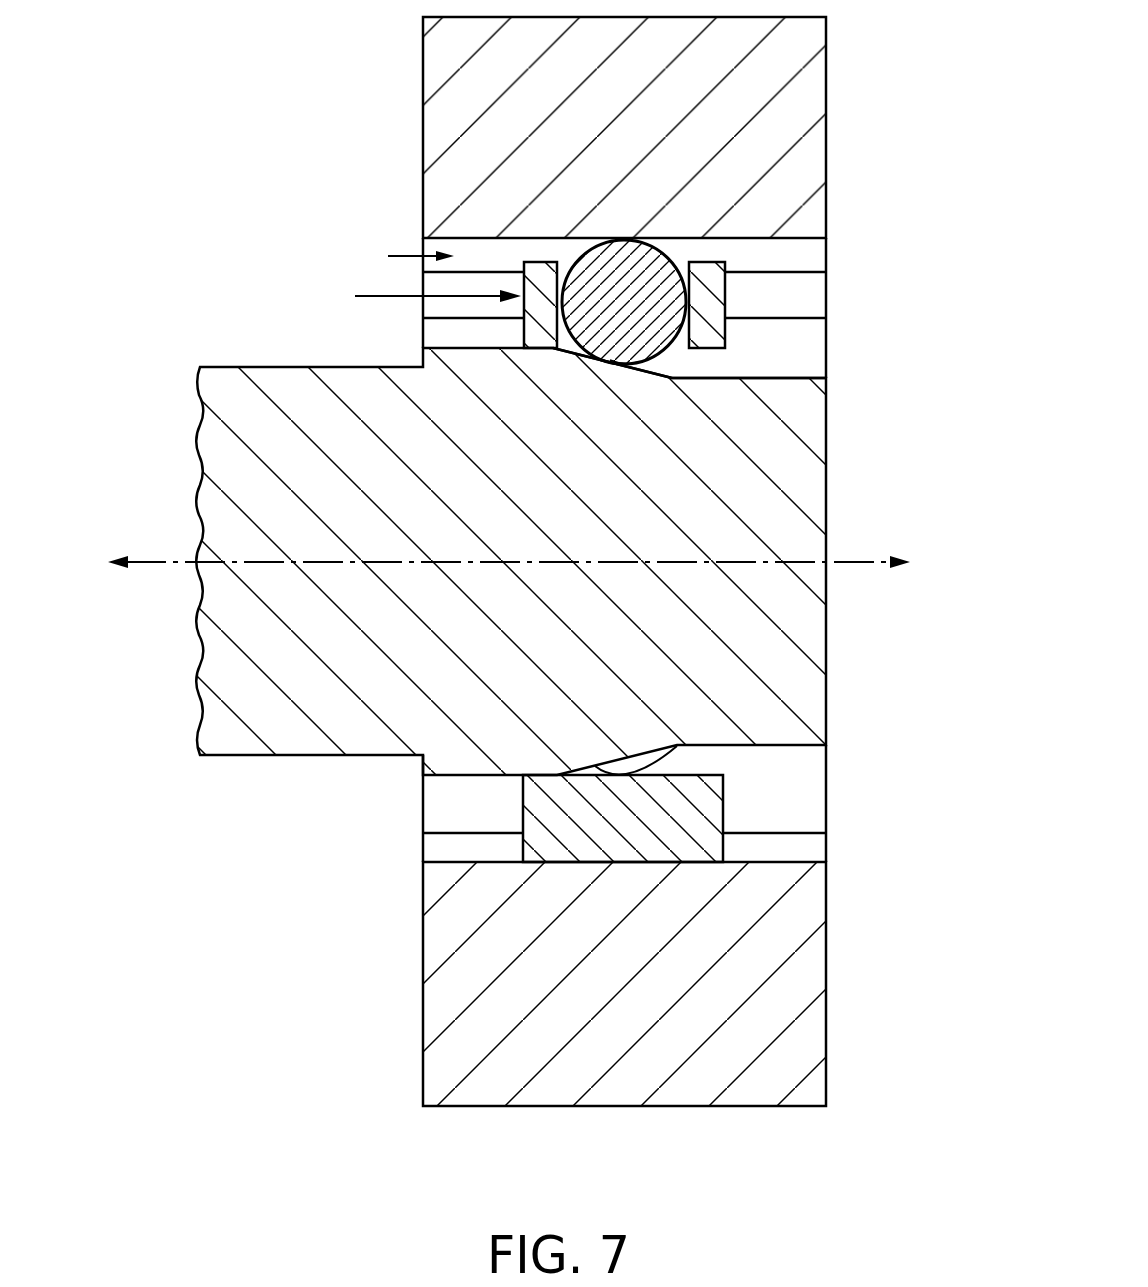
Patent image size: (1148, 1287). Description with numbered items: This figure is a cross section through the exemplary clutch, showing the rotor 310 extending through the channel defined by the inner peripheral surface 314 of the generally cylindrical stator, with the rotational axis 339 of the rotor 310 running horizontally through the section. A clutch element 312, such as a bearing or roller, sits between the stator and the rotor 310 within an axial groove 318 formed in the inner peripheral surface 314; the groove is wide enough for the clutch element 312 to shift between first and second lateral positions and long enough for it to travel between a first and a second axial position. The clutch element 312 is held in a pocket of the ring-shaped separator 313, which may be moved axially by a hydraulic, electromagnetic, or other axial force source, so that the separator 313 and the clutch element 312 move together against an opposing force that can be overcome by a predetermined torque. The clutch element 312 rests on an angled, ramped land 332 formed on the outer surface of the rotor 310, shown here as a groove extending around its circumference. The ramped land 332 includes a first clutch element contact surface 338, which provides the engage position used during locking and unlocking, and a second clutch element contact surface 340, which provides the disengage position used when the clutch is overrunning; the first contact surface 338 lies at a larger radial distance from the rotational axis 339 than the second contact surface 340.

The rotor 310 is at (813, 482).
The clutch element 312 is at (653, 317).
The separator 313 is at (547, 272).
The inner peripheral surface 314 is at (480, 242).
The axial groove 318 is at (388, 256).
The ramped land 332 is at (584, 381).
The first clutch element contact surface 338 is at (625, 364).
The rotational axis 339 is at (860, 562).
The second clutch element contact surface 340 is at (728, 379).